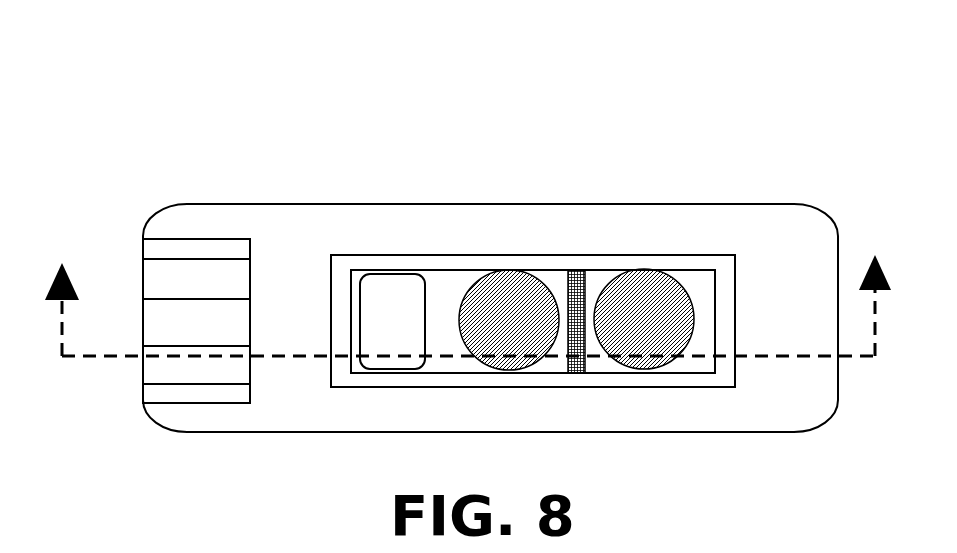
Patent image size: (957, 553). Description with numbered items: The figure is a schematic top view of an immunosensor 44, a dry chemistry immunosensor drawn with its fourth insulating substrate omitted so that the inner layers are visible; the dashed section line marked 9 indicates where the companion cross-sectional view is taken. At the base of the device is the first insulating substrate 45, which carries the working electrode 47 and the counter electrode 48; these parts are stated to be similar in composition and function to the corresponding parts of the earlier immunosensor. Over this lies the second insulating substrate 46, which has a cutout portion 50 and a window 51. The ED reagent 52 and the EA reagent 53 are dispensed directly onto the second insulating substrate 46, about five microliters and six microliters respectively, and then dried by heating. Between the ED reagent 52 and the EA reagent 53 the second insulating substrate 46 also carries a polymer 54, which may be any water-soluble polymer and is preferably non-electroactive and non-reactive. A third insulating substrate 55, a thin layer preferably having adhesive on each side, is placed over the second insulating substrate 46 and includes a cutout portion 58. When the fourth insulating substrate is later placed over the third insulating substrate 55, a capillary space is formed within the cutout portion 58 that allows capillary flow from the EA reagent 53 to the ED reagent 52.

The immunosensor 44 is at (468, 231).
The second insulating substrate 46 is at (270, 223).
The cutout portion 50 is at (213, 247).
The working electrode 47 is at (167, 280).
The first insulating substrate 45 is at (167, 322).
The counter electrode 48 is at (167, 367).
The third insulating substrate 55 is at (704, 257).
The cutout portion 58 is at (443, 283).
The window 51 is at (391, 308).
The ED reagent 52 is at (508, 320).
The polymer 54 is at (576, 317).
The EA reagent 53 is at (644, 317).
The section line 9- 9 is at (468, 289).